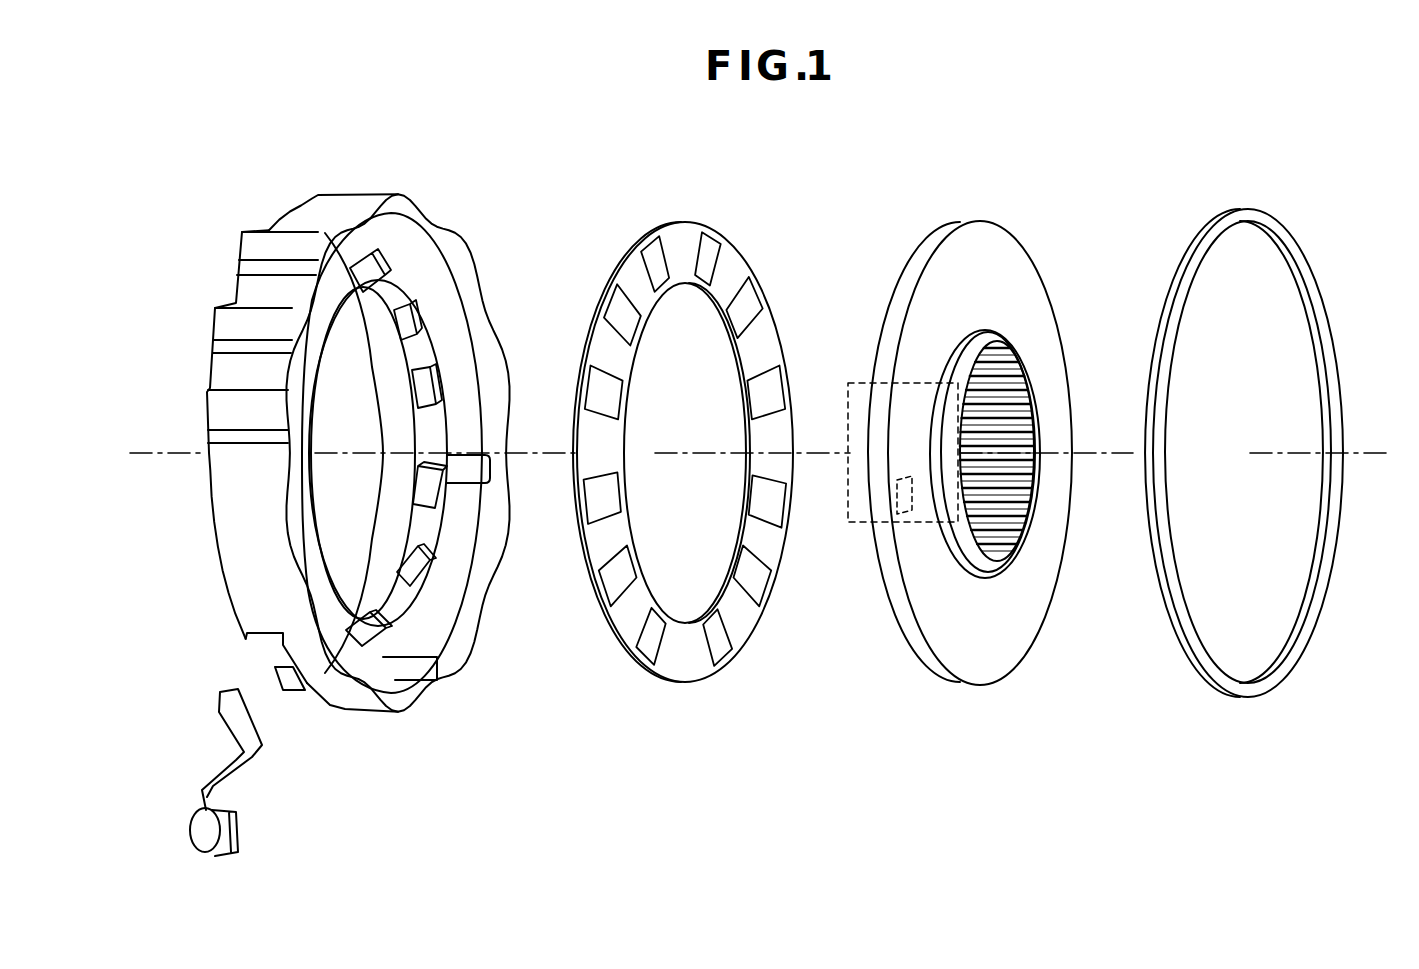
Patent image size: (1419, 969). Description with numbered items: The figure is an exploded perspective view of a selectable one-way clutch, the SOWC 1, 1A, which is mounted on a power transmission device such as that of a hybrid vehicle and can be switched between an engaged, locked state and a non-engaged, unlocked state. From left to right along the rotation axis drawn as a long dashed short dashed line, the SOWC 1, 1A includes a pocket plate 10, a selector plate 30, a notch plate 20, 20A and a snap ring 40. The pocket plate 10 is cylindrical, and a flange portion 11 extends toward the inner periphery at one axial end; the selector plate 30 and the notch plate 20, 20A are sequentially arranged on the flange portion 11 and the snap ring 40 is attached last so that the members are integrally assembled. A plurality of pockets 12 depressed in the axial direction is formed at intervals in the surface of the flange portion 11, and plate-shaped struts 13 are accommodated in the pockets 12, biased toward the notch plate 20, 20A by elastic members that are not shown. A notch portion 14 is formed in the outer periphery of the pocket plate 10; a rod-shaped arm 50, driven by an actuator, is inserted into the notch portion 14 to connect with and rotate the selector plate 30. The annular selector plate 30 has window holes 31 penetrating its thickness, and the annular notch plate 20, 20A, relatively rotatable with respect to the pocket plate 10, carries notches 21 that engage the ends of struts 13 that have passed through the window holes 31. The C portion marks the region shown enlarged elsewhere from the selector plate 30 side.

The SOWC 1 is at (749, 487).
The bearing device (first embodiment) 1A is at (749, 487).
The pocket plate 10 is at (354, 499).
The flange portion 11 is at (440, 432).
The pockets 12 is at (432, 548).
The struts 13 is at (412, 323).
The notch portion 14 is at (257, 650).
The notch plate 20 is at (944, 487).
The rolling bearing (first embodiment) 20A is at (944, 453).
The notches 21 is at (910, 508).
The selector plate 30 is at (683, 456).
The window hole 31 is at (660, 262).
The snap ring 40 is at (1247, 697).
The arm 50 is at (246, 820).
The C portion C is at (862, 383).